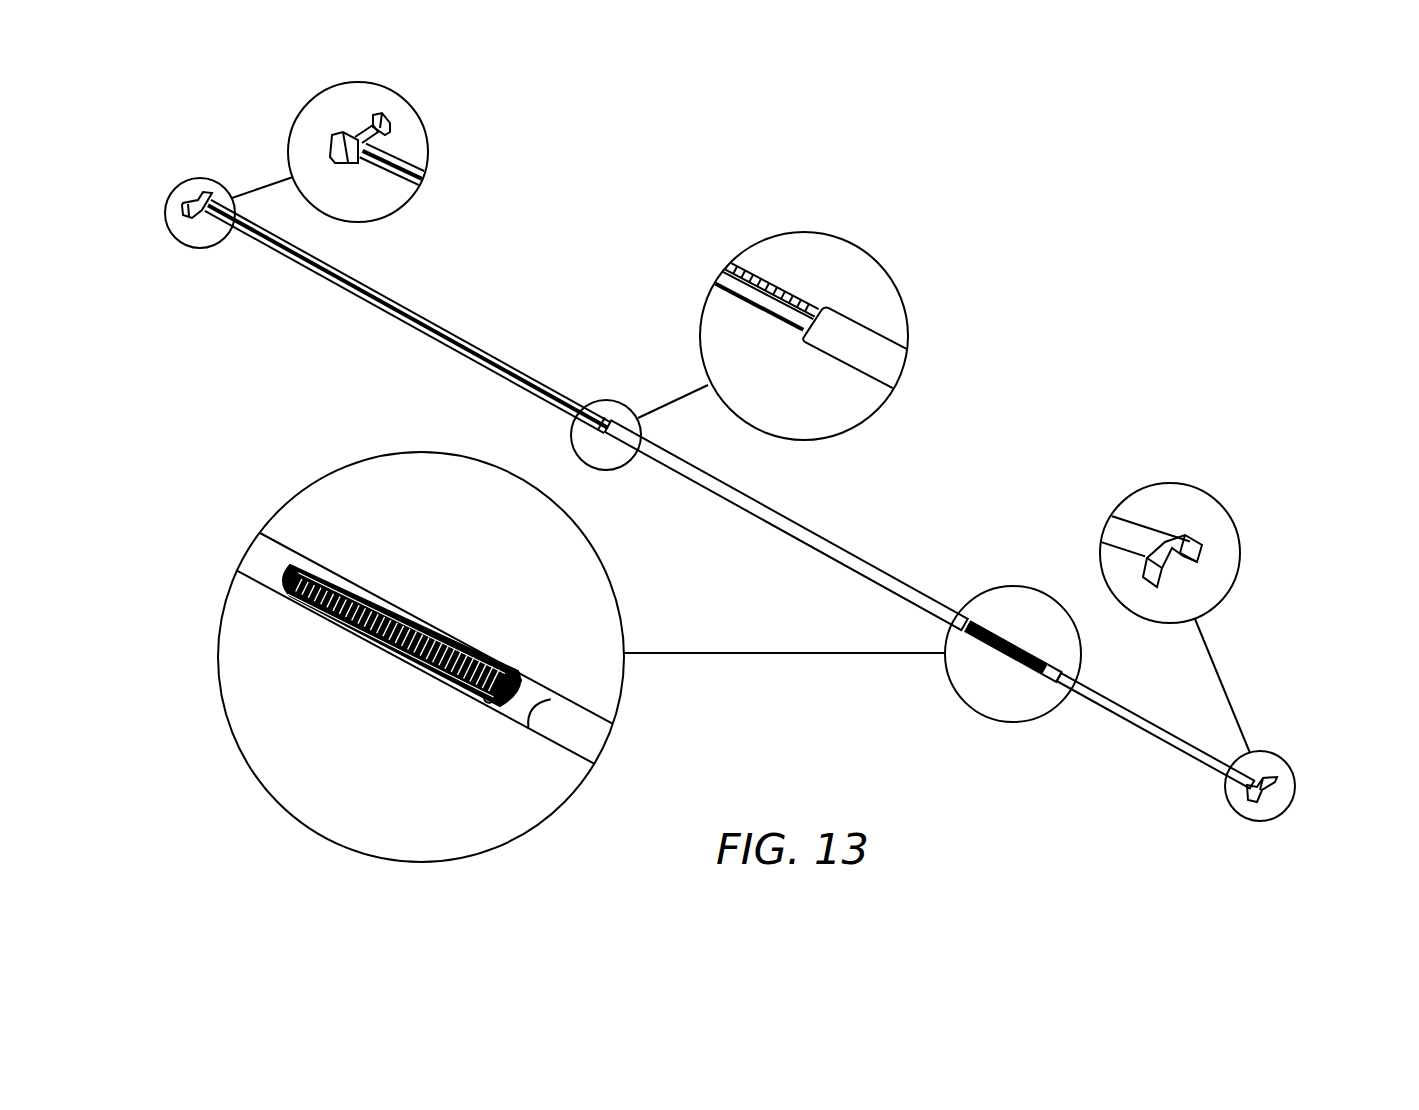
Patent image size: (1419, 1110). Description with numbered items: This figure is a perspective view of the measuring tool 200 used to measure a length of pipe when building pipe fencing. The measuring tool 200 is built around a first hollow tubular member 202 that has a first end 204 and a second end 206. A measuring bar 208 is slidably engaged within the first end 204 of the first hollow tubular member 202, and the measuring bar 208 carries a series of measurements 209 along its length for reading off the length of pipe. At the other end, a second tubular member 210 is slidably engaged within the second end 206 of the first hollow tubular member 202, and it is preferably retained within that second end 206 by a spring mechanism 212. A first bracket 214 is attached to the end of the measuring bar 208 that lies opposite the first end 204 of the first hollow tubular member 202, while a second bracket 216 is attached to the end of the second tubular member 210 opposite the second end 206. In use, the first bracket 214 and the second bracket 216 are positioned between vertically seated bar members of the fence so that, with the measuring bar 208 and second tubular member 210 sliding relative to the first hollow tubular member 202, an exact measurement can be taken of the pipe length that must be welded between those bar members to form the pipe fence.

The measuring tool 200 is at (680, 160).
The first hollow tubular member 202 is at (787, 522).
The first end 204 is at (608, 440).
The second end 206 is at (1062, 676).
The measuring bar 208 is at (433, 327).
The series of measurements 209 is at (778, 285).
The second tubular member 210 is at (1133, 707).
The spring mechanism 212 is at (398, 605).
The first bracket 214 is at (198, 200).
The second bracket 216 is at (1190, 547).